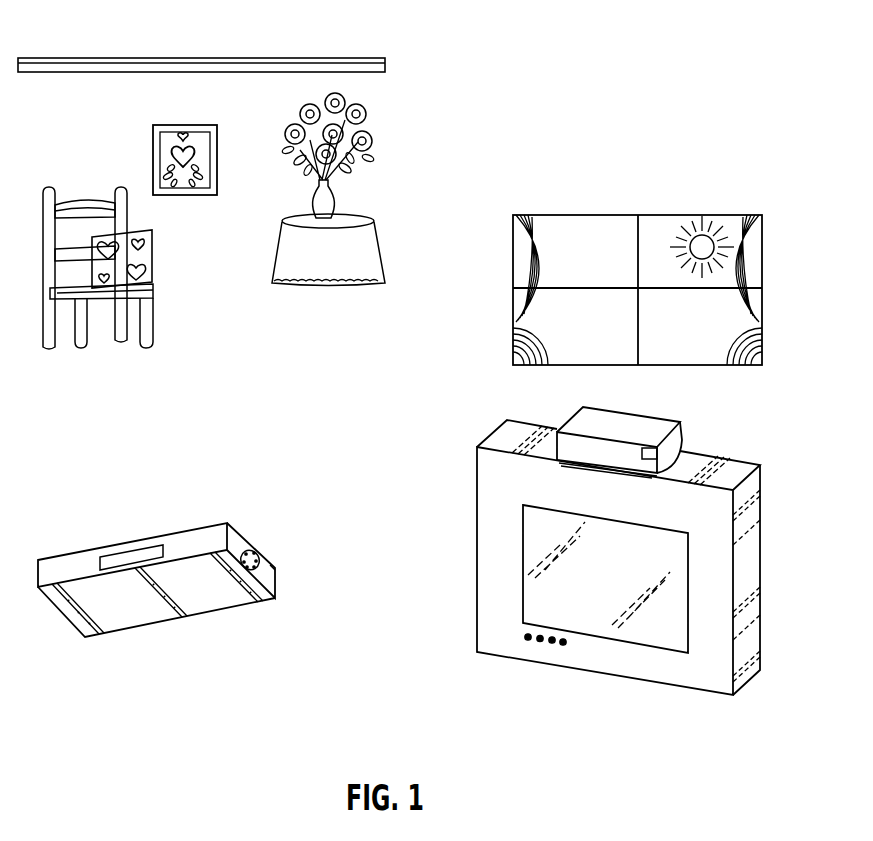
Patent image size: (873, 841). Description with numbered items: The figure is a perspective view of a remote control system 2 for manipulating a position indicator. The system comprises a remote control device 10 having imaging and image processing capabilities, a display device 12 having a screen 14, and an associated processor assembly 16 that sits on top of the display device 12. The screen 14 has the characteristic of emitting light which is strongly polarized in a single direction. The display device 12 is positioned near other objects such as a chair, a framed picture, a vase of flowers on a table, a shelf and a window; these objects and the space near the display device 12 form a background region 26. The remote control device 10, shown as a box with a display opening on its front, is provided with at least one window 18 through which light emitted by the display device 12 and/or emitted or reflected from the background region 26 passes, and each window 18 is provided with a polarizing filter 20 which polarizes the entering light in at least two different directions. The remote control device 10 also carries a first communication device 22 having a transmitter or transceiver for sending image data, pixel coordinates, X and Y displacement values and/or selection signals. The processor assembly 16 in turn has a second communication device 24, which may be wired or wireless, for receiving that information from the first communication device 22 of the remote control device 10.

The remote control system 2 is at (280, 681).
The remote control device 10 is at (182, 530).
The display device 12 is at (730, 470).
The screen 14 is at (530, 592).
The processor assembly 16 is at (650, 432).
The window 18 is at (259, 553).
The polarizing filter 20 is at (270, 566).
The first communication device 22 is at (112, 558).
The second communication device 24 is at (658, 452).
The background region 26 is at (418, 57).